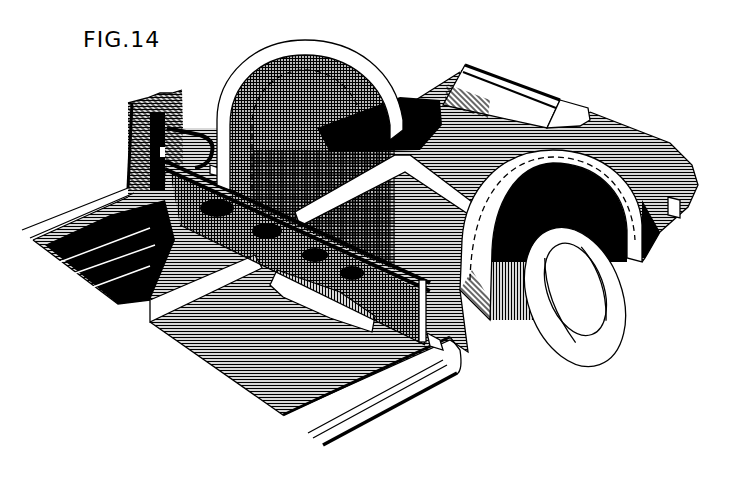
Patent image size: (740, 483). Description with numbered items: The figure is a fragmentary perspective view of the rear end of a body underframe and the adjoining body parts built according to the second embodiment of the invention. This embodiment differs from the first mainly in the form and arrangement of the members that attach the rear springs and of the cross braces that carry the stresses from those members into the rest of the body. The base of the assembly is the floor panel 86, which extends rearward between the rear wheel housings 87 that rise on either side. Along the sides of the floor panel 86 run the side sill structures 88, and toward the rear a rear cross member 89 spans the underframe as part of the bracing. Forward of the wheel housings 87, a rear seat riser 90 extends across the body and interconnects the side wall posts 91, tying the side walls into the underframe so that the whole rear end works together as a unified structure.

The floor panel 86 is at (228, 372).
The rear wheel housings 87 is at (318, 62).
The side sill structures 88 is at (313, 415).
The rear cross member 89 is at (533, 112).
The rear seat riser 90 is at (207, 143).
The side wall posts 91 is at (127, 142).